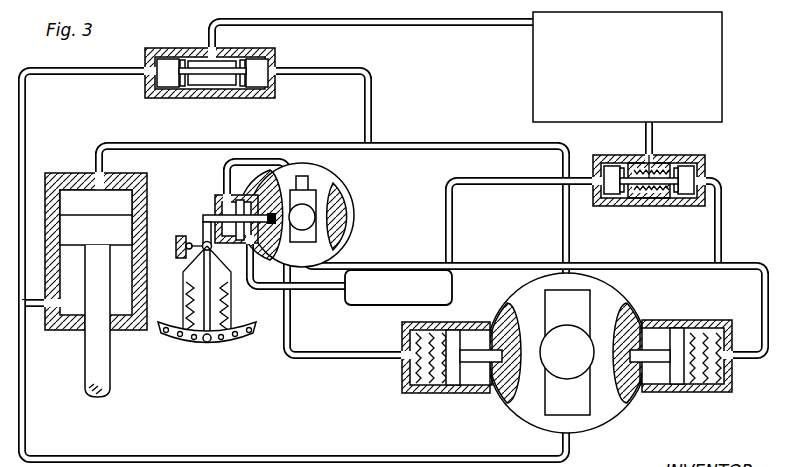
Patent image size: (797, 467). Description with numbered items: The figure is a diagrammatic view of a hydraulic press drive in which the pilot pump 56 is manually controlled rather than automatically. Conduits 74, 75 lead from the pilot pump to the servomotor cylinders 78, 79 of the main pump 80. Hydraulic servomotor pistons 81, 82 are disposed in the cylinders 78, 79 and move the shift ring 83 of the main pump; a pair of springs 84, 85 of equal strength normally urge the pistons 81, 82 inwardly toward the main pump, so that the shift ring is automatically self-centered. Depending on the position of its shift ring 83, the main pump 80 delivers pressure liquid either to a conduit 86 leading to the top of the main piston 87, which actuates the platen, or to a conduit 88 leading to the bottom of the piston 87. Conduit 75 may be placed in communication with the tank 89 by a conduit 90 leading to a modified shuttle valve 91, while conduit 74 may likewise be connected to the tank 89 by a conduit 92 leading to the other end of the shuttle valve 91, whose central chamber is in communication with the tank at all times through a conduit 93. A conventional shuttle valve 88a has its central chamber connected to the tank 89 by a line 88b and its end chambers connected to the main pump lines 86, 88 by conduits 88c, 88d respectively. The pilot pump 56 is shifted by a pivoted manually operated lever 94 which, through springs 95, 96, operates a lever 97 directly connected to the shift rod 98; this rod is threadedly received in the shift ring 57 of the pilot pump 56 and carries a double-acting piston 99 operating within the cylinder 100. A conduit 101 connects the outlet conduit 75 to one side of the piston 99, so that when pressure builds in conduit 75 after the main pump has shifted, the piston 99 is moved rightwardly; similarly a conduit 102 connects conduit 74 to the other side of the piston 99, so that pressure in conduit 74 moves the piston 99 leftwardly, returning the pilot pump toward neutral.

The pilot pump 56 is at (310, 209).
The shift ring 57 is at (345, 186).
The conduit 74 is at (390, 262).
The conduit 75 is at (288, 346).
The servomotor cylinder 78 is at (700, 341).
The servomotor cylinder 79 is at (434, 341).
The main pump 80 is at (626, 408).
The hydraulic servomotor piston 81 is at (678, 330).
The hydraulic servomotor piston 82 is at (454, 322).
The shift ring 83 is at (632, 324).
The spring 84 is at (714, 330).
The spring 85 is at (408, 324).
The conduit 86 is at (571, 238).
The main piston 87 is at (74, 234).
The conduit 88 is at (242, 458).
The shuttle valve 88a is at (222, 99).
The line 88b is at (402, 28).
The conduit 88c is at (373, 118).
The conduit 88d is at (22, 136).
The tank 89 is at (622, 58).
The conduit 90 is at (454, 224).
The shuttle valve 91 is at (650, 207).
The conduit 92 is at (722, 218).
The conduit 93 is at (655, 142).
The manually operated lever 94 is at (222, 340).
The spring 95 is at (184, 314).
The spring 96 is at (232, 316).
The lever 97 is at (200, 240).
The shift rod 98 is at (206, 218).
The double-acting piston 99 is at (247, 205).
The cylinder 100 is at (217, 207).
The conduit 101 is at (223, 172).
The conduit 102 is at (348, 284).